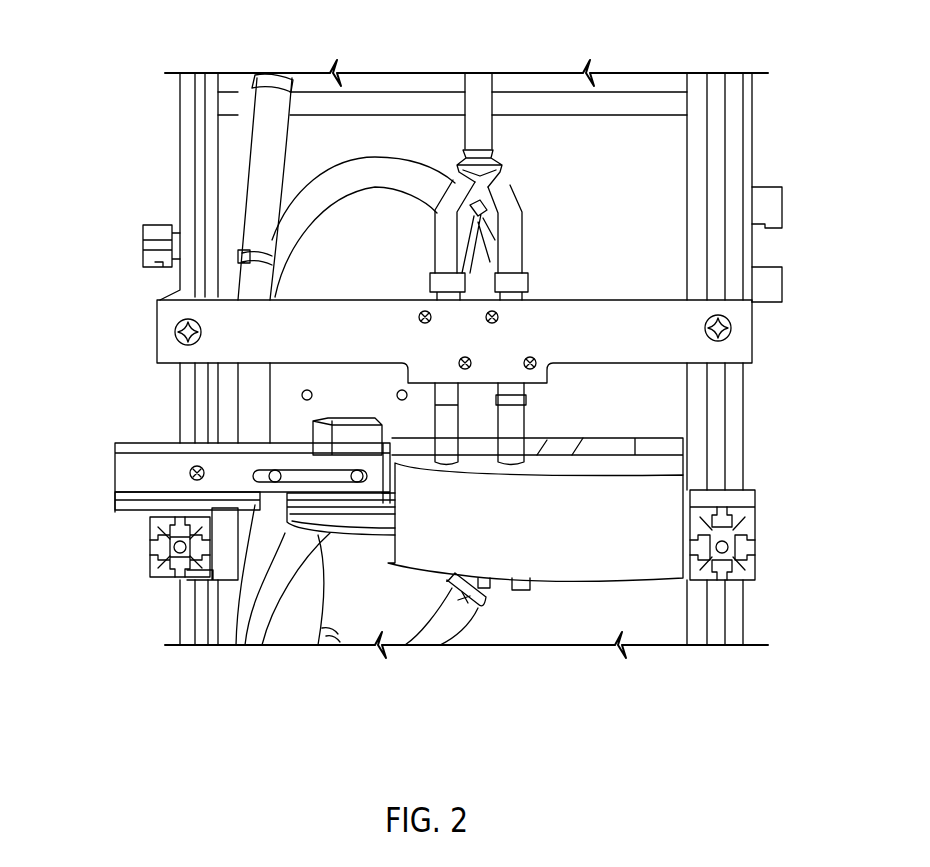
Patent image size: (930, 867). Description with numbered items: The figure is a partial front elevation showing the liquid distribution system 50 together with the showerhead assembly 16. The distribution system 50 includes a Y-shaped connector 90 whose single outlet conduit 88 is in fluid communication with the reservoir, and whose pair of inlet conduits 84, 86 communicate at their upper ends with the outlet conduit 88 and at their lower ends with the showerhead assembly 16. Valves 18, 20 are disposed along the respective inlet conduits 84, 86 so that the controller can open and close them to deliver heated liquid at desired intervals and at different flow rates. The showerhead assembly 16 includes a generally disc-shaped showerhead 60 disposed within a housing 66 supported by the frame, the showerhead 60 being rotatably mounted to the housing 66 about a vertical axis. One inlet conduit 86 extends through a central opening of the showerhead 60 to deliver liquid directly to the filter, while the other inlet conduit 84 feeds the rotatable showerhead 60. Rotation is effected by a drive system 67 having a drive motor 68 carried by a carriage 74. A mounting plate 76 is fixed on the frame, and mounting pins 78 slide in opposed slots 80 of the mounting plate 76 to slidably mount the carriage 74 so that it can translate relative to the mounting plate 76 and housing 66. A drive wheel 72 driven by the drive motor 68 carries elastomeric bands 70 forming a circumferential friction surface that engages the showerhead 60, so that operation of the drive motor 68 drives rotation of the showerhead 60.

The showerhead assembly 16 is at (637, 582).
The valve 18 is at (430, 297).
The valve 20 is at (531, 294).
The distribution system 50 is at (512, 138).
The showerhead 60 is at (537, 463).
The housing 66 is at (531, 532).
The drive system 67 is at (101, 496).
The drive motor 68 is at (334, 418).
The elastomeric band 70 is at (276, 482).
The drive wheel 72 is at (340, 522).
The carriage 74 is at (135, 445).
The mounting plate 76 is at (117, 480).
The mounting pin 78 is at (357, 482).
The slot 80 is at (272, 470).
The inlet conduit 84 is at (438, 250).
The inlet conduit 86 is at (502, 250).
The outlet conduit 88 is at (470, 124).
The Y-shaped connector 90 is at (460, 180).